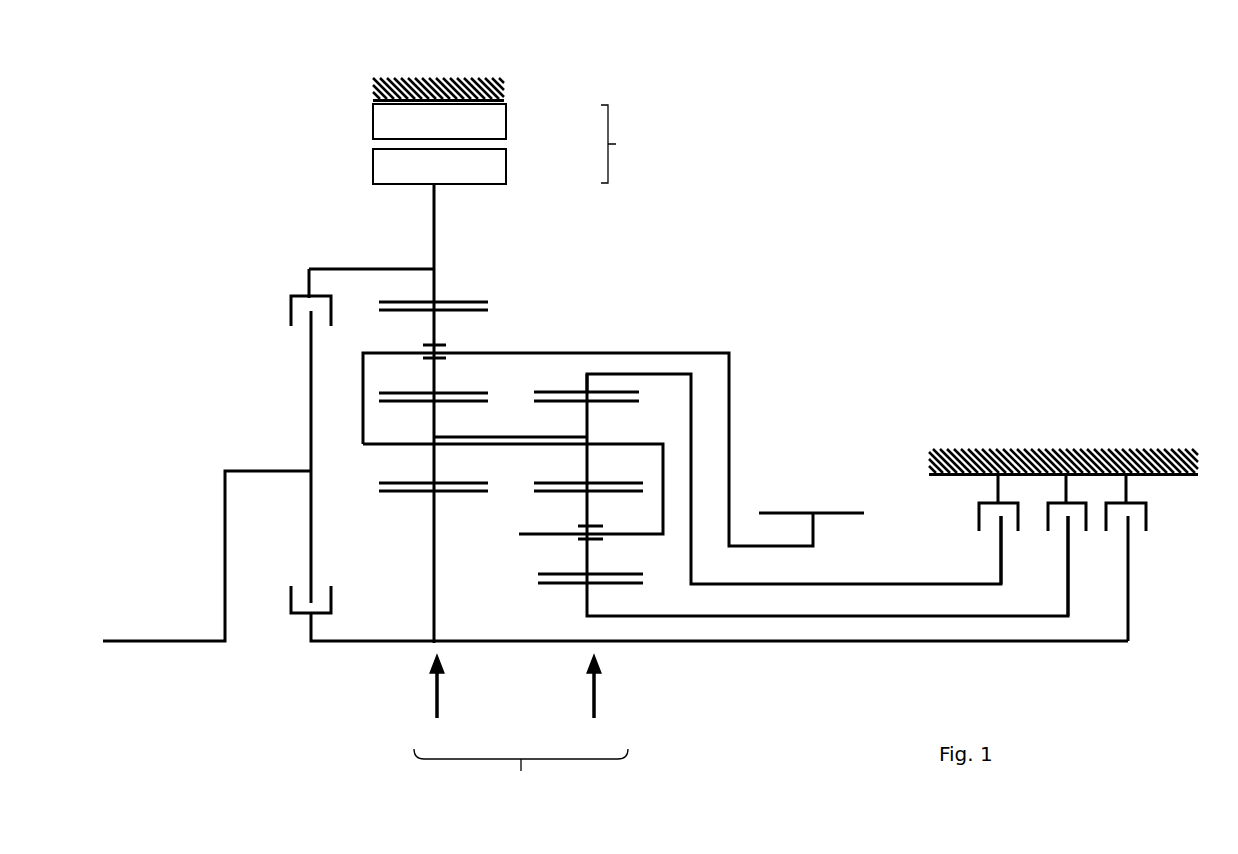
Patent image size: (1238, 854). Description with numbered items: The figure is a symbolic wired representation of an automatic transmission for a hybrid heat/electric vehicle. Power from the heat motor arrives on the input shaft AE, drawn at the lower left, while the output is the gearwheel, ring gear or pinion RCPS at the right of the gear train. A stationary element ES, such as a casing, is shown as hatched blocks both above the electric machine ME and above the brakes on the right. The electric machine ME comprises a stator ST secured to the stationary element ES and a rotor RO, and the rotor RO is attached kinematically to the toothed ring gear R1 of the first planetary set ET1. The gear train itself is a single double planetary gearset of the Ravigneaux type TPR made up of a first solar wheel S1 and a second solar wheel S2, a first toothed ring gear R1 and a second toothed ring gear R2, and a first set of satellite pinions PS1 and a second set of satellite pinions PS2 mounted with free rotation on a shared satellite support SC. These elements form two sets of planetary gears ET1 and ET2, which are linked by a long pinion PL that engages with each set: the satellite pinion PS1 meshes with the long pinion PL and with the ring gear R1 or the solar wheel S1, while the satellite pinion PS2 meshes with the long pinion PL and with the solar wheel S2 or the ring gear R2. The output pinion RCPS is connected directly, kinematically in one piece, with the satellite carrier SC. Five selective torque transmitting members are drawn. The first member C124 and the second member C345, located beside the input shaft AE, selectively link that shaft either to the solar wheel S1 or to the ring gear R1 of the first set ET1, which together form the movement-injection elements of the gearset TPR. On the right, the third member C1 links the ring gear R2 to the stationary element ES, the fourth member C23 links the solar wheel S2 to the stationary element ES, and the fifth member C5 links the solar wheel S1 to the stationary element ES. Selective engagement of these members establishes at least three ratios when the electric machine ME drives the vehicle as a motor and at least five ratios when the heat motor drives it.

The stationary element ES is at (500, 90).
The stator ST is at (505, 120).
The rotor RO is at (505, 168).
The electric machine ME is at (634, 144).
The first solar wheel S1 is at (410, 492).
The first toothed ring gear R1 is at (453, 300).
The first set of satellite pinions PS1 is at (453, 338).
The output gearwheel, ring gear or pinion RCPS is at (812, 512).
The shared satellite support SC is at (640, 440).
The long pinion PL is at (497, 448).
The second solar wheel S2 is at (597, 584).
The second toothed ring gear R2 is at (575, 388).
The second set of satellite pinions PS2 is at (598, 540).
The second selective torque transmitting member C345 is at (290, 313).
The first selective torque transmitting member C124 is at (308, 618).
The input shaft AE is at (163, 638).
The third selective torque transmitting member C1 is at (980, 535).
The fourth selective torque transmitting member C23 is at (1087, 532).
The fifth selective torque transmitting member C5 is at (1147, 532).
The first set of planetary gears ET1 is at (441, 704).
The second set of planetary gears ET2 is at (588, 704).
The double planetary gearset of the Ravigneaux type TPR is at (521, 782).